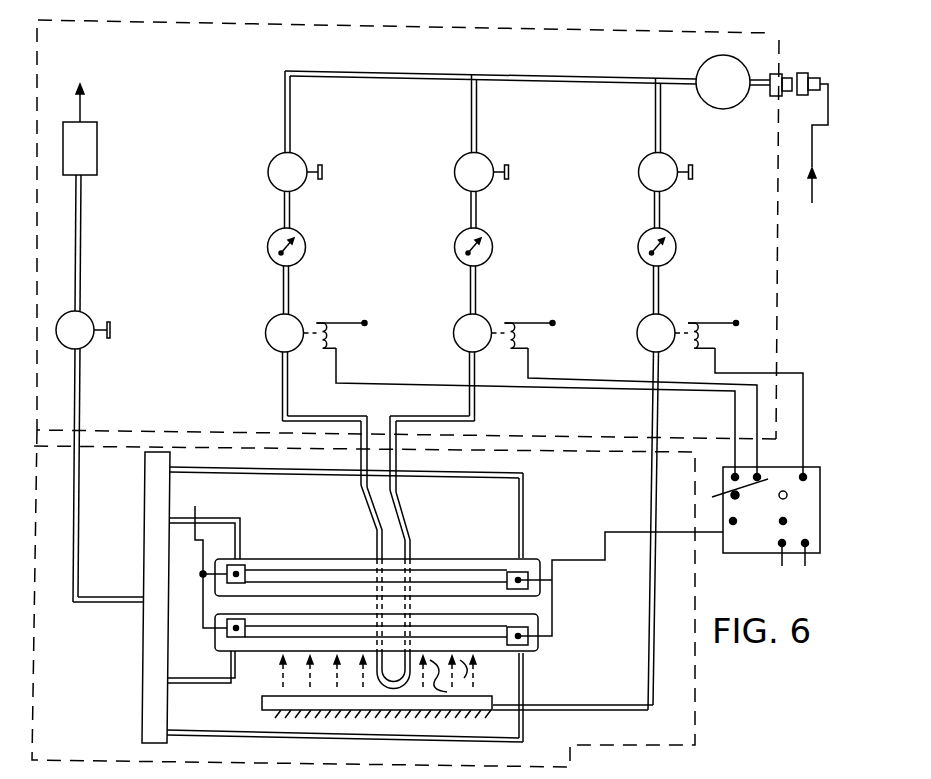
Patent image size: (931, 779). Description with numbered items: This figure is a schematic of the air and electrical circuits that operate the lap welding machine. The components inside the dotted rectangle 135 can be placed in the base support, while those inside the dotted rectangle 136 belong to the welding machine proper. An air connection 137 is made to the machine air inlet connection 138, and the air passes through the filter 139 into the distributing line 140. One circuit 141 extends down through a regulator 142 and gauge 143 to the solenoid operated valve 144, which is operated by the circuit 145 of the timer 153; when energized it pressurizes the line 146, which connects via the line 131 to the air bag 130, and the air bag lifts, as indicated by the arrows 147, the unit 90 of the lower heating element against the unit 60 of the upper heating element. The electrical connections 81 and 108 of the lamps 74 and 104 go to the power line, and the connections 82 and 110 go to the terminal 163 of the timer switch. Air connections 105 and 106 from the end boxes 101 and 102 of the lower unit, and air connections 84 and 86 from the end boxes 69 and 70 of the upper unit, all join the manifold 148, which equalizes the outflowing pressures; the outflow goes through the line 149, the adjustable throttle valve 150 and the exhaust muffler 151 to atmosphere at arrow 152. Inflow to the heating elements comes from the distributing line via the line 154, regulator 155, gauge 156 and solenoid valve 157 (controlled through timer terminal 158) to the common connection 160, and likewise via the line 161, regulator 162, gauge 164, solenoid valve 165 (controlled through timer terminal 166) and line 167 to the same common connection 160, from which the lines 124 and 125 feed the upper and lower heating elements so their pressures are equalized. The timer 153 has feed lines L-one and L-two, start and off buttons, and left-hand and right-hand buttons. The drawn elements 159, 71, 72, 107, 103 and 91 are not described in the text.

The dotted rectangle 135 is at (429, 27).
The machine air inlet connection 138 is at (772, 58).
The dotted rectangle 136 is at (705, 716).
The air connection 137 is at (820, 82).
The filter 139 is at (696, 71).
The distributing line 140 is at (507, 75).
The line 161 is at (293, 136).
The regulator 162 is at (302, 160).
The gauge 164 is at (306, 248).
The solenoid valve 165 is at (301, 325).
The line 154 is at (478, 127).
The regulator 155 is at (494, 165).
The gauge 156 is at (494, 247).
The solenoid valve 157 is at (497, 324).
The circuit 141 is at (661, 127).
The regulator 142 is at (672, 190).
The gauge 143 is at (677, 256).
The solenoid operated valve 144 is at (681, 335).
The line 167 is at (286, 406).
The second outlet conduit 159 is at (476, 416).
The common connection 160 is at (377, 417).
The line 124 is at (364, 518).
The line 125 is at (412, 538).
The line 146 is at (657, 428).
The timer terminal 166 is at (732, 476).
The circuit 145 is at (800, 476).
The timer 153 is at (750, 543).
The timer terminal 158 is at (712, 497).
The terminal 163 is at (733, 536).
The arrow 152 is at (83, 113).
The exhaust muffler 151 is at (97, 167).
The throttle valve 150 is at (90, 313).
The line 149 is at (80, 543).
The manifold 148 is at (143, 687).
The line 131 is at (550, 712).
The air connection 86 is at (522, 536).
The end box 70 is at (533, 557).
The air connection 106 is at (523, 672).
The end box 69 is at (204, 548).
The air connection 84 is at (238, 524).
The air connection 105 is at (231, 658).
The lamp 74 is at (285, 577).
The upper electrode tube 71 is at (262, 575).
The electrical connection 81 is at (239, 567).
The connection 82 is at (535, 572).
The electrode end 72 is at (494, 570).
The unit of upper heating element 60 is at (450, 550).
The lamp 104 is at (271, 630).
The lower electrode tube 107 is at (501, 630).
The electrical connection 108 is at (228, 644).
The unit of lower heating element 90 is at (531, 660).
The end box 101 is at (240, 610).
The lead 103 is at (226, 618).
The end box 102 is at (546, 609).
The connection 110 is at (539, 640).
The arrows 147 is at (462, 672).
The air bag 130 is at (444, 712).
The nozzle openings 91 is at (277, 710).